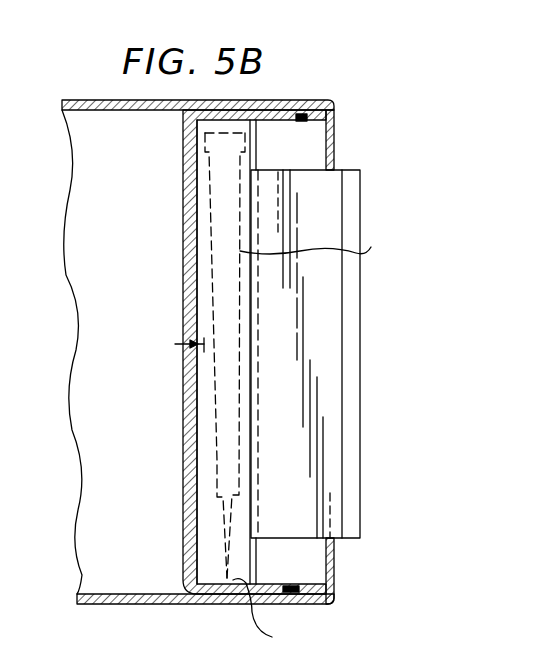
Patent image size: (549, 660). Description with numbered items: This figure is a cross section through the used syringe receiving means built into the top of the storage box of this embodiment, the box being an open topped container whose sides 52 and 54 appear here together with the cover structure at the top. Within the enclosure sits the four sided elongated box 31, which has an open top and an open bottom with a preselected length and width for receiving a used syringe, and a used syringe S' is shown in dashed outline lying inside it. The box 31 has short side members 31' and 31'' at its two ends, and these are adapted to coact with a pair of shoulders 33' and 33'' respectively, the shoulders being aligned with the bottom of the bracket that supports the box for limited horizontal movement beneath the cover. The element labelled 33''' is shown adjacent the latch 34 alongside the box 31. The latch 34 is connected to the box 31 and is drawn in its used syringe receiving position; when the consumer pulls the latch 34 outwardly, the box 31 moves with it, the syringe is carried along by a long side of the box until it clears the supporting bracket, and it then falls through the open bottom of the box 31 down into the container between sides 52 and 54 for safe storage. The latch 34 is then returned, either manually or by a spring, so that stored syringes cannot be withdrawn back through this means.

The side 54 is at (134, 111).
The side 52 is at (103, 594).
The short side member 31' is at (213, 352).
The four sided elongated box 31 is at (313, 352).
The short side member 31'' is at (275, 613).
The latch 34 is at (354, 440).
The shoulder 33' is at (290, 142).
The shoulder 33'' is at (284, 565).
The intermediate flange 33''' is at (331, 241).
The used syringe S' is at (168, 326).